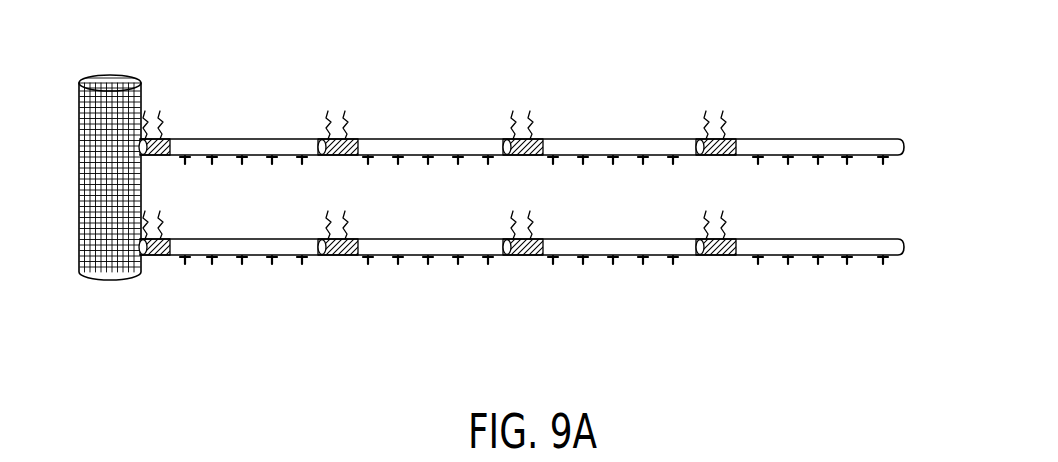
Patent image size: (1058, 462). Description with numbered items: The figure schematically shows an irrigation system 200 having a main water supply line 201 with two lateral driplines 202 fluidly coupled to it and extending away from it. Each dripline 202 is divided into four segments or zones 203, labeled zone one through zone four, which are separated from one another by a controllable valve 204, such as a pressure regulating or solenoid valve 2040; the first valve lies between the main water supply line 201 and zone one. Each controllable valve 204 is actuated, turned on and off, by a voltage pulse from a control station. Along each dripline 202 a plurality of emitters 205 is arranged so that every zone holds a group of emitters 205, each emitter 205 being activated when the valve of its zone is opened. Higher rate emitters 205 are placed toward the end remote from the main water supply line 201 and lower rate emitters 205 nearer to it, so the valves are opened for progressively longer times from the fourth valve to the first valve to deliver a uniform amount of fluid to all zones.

The irrigation system 200 is at (493, 204).
The main water supply line 201 is at (123, 282).
The lateral dripline 202 is at (878, 243).
The segment (zone) 203 is at (817, 188).
The controllable valve 204 is at (435, 292).
The pressure regulating or solenoid valve 2040 is at (428, 300).
The emitter 205 is at (578, 258).